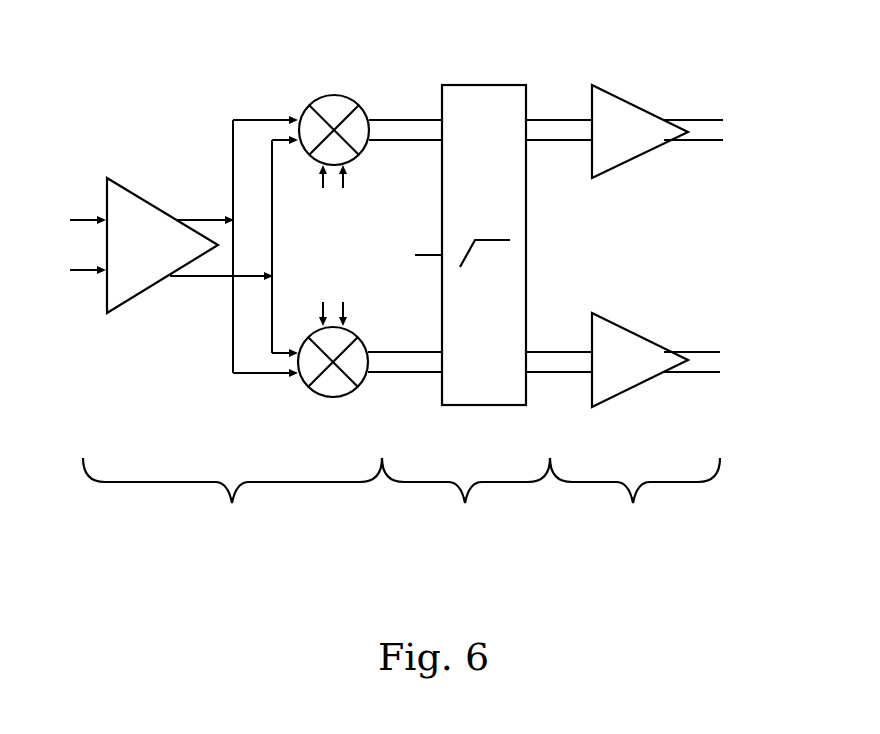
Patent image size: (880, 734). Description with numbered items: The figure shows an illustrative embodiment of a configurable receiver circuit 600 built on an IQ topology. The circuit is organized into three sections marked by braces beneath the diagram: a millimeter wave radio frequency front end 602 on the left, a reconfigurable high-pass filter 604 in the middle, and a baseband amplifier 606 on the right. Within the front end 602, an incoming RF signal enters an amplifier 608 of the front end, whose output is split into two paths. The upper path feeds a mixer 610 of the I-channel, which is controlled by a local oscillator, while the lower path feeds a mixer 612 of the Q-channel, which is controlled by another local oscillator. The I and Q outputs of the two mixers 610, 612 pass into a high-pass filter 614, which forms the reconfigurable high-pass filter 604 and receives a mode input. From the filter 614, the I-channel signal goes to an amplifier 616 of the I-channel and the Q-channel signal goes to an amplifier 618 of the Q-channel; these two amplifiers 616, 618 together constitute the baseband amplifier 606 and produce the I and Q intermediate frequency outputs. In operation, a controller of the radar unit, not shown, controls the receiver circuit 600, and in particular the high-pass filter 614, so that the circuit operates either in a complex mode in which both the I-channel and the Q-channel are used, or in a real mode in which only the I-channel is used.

The configurable receiver circuit 600 is at (182, 78).
The millimeter wave radio frequency front end 602 is at (232, 507).
The reconfigurable high-pass filter 604 is at (466, 518).
The baseband amplifier 606 is at (635, 518).
The amplifier of the front end 608 is at (153, 206).
The mixer of the I-channel 610 is at (308, 106).
The mixer of the Q-channel 612 is at (308, 385).
The high-pass filter 614 is at (477, 85).
The amplifier of the I-channel 616 is at (642, 105).
The amplifier of the Q-channel 618 is at (637, 335).